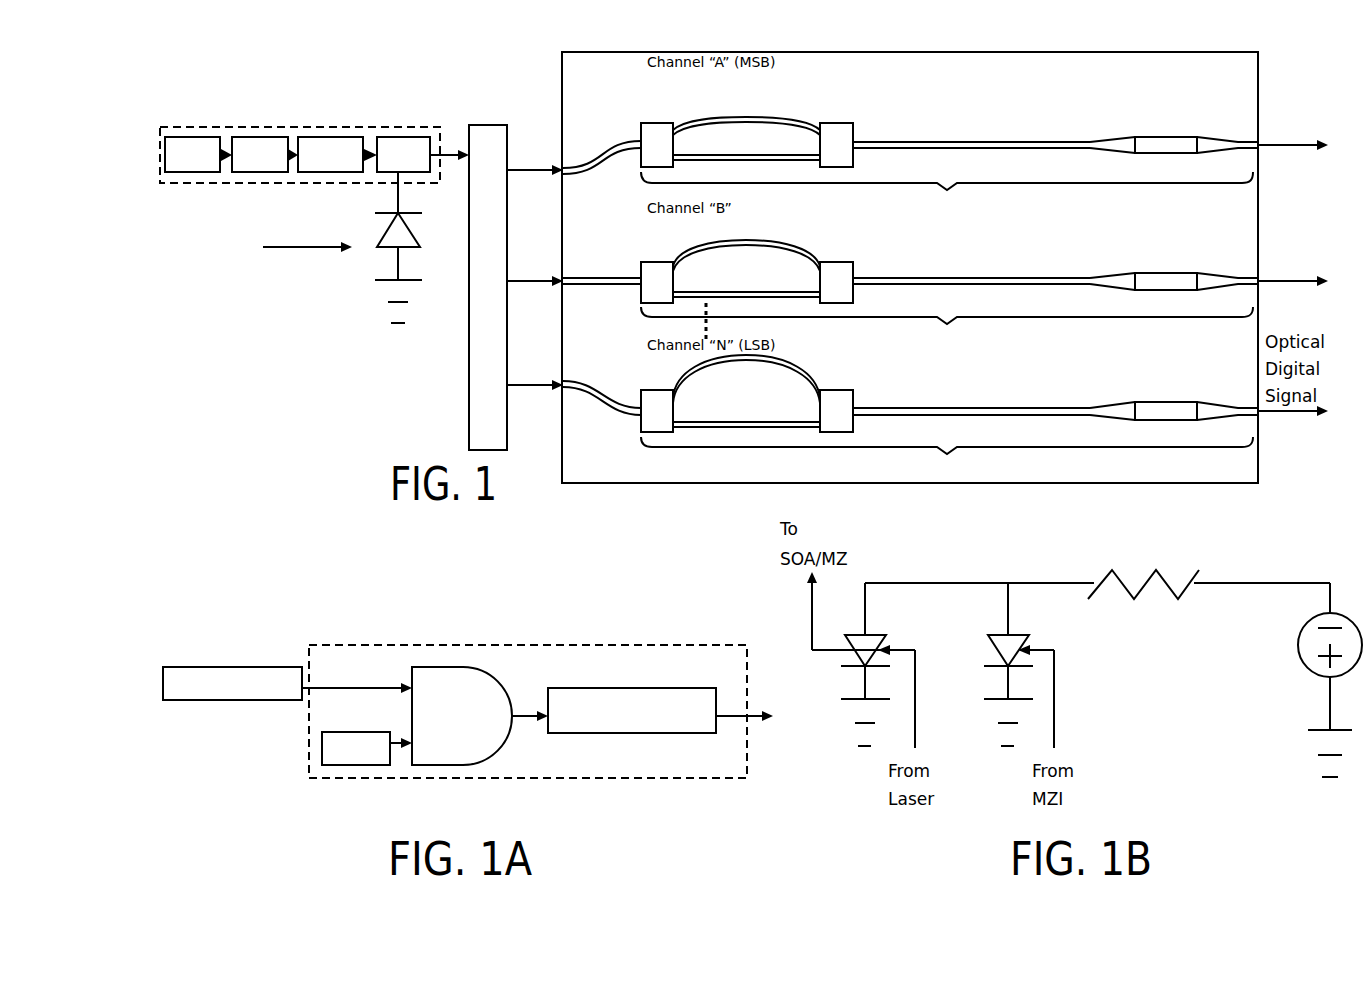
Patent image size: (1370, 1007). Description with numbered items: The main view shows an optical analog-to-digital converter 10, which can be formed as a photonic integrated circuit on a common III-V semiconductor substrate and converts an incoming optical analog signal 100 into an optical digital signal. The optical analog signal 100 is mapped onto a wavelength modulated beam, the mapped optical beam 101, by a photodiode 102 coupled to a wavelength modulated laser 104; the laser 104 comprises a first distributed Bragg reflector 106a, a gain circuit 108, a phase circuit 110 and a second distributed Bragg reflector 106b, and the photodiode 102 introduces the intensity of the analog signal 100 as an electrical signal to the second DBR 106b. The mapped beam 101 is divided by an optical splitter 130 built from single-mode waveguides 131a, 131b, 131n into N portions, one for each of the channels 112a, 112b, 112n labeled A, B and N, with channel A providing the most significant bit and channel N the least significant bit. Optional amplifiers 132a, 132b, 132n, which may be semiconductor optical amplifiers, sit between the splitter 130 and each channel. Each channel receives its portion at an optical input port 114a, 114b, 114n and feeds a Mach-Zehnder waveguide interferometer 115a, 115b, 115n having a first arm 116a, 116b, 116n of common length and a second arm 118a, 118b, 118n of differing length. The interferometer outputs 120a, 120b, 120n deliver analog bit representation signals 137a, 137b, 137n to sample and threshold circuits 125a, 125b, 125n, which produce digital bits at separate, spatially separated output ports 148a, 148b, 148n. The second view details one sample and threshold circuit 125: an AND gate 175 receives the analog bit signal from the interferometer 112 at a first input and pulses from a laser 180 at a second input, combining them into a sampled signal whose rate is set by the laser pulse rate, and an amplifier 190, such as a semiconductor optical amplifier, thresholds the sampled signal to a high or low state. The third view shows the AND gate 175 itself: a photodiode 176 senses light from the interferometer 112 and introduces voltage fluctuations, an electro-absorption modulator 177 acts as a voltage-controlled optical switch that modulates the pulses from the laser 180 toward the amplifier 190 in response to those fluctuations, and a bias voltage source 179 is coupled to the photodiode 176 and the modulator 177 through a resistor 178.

In FIG. 1, the optical analog-to-digital converter 10 is at (312, 367).
In FIG. 1, the optical analog signal 100 is at (303, 247).
In FIG. 1, the mapped optical beam 101 is at (451, 148).
In FIG. 1, the photodiode 102 is at (413, 230).
In FIG. 1, the wavelength modulated laser 104 is at (168, 127).
In FIG. 1, the first distributed Bragg reflector 106a is at (199, 137).
In FIG. 1, the second distributed Bragg reflector 106b is at (397, 137).
In FIG. 1, the gain circuit 108 is at (267, 137).
In FIG. 1, the phase circuit 110 is at (330, 137).
In FIG. 1, the optical splitter 130 is at (493, 125).
In FIG. 1, the single-mode waveguide 131a is at (522, 168).
In FIG. 1, the single-mode waveguide 131b is at (522, 279).
In FIG. 1, the single-mode waveguide 131n is at (522, 383).
In FIG. 1, the amplifier 132a is at (563, 173).
In FIG. 1, the amplifier 132b is at (563, 284).
In FIG. 1, the amplifier 132n is at (563, 388).
In FIG. 1, the optical input port 114a is at (599, 150).
In FIG. 1, the optical input port 114b is at (583, 281).
In FIG. 1, the optical input port 114n is at (598, 397).
In FIG. 1, the channel 112a is at (947, 164).
In FIG. 1, the channel 112b is at (947, 296).
In FIG. 1, the channel 112n is at (947, 418).
In FIG. 1, the optical waveguide interferometer 115a is at (813, 153).
In FIG. 1, the optical waveguide interferometer 115b is at (818, 290).
In FIG. 1, the optical waveguide interferometer 115n is at (815, 416).
In FIG. 1, the first arm 116a is at (757, 161).
In FIG. 1, the first arm 116b is at (783, 299).
In FIG. 1, the first arm 116n is at (808, 431).
In FIG. 1, the second arm 118a is at (681, 132).
In FIG. 1, the second arm 118b is at (696, 251).
In FIG. 1, the second arm 118n is at (707, 364).
In FIG. 1, the output waveguide channel A 120a is at (857, 142).
In FIG. 1, the output waveguide channel B 120b is at (857, 278).
In FIG. 1, the output waveguide channel N 120n is at (857, 408).
In FIG. 1, the analog bit representation signal 137a is at (1000, 141).
In FIG. 1, the analog bit representation signal 137b is at (1000, 277).
In FIG. 1, the analog bit representation signal 137n is at (1010, 407).
In FIG. 1, the optical sample and threshold circuit 125a is at (1143, 137).
In FIG. 1, the optical sample and threshold circuit 125b is at (1143, 273).
In FIG. 1, the optical sample and threshold circuit 125n is at (1143, 402).
In FIG. 1, the output port 148a is at (1326, 140).
In FIG. 1, the output port 148b is at (1326, 277).
In FIG. 1, the output port 148n is at (1326, 416).
In FIG. 1A, the interferometer 112 is at (226, 667).
In FIG. 1A, the sample and threshold circuit 125 is at (585, 645).
In FIG. 1A, the AND gate 175 is at (487, 668).
In FIG. 1A, the laser 180 is at (350, 732).
In FIG. 1A, the amplifier 190 is at (632, 688).
In FIG. 1B, the photodiode 176 is at (1022, 629).
In FIG. 1B, the electro-absorption modulator 177 is at (881, 629).
In FIG. 1B, the resistor 178 is at (1160, 573).
In FIG. 1B, the bias voltage source 179 is at (1298, 647).